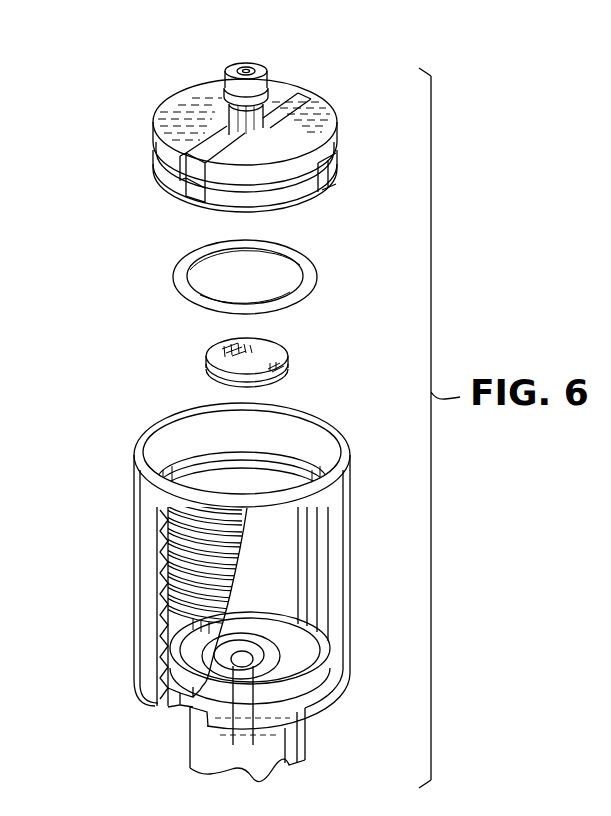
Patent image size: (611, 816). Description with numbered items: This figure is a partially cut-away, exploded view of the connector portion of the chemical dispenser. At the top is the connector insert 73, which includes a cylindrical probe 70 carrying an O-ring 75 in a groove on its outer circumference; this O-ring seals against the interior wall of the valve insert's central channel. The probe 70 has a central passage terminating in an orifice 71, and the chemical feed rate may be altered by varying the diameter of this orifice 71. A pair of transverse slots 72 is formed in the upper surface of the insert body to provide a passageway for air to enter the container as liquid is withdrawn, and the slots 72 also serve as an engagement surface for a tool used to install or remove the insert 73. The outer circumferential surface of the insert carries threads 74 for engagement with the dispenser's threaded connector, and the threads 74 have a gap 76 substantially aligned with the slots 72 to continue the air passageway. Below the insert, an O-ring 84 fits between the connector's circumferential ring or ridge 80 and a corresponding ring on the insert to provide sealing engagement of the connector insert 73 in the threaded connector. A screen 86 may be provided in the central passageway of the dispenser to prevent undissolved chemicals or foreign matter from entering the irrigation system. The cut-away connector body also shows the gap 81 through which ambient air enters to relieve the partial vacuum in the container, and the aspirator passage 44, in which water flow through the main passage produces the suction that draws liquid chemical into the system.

The aspirator passage 44 is at (307, 740).
The cylindrical probe 70 is at (262, 80).
The orifice 71 is at (246, 68).
The transverse slots 72 is at (208, 143).
The connector insert 73 is at (282, 157).
The threads 74 is at (213, 197).
The O-ring 75 is at (287, 95).
The gap 76 is at (186, 192).
The circumferential ring or ridge 80 is at (170, 683).
The gap 81 is at (168, 707).
The O-ring 84 is at (313, 282).
The screen 86 is at (288, 359).